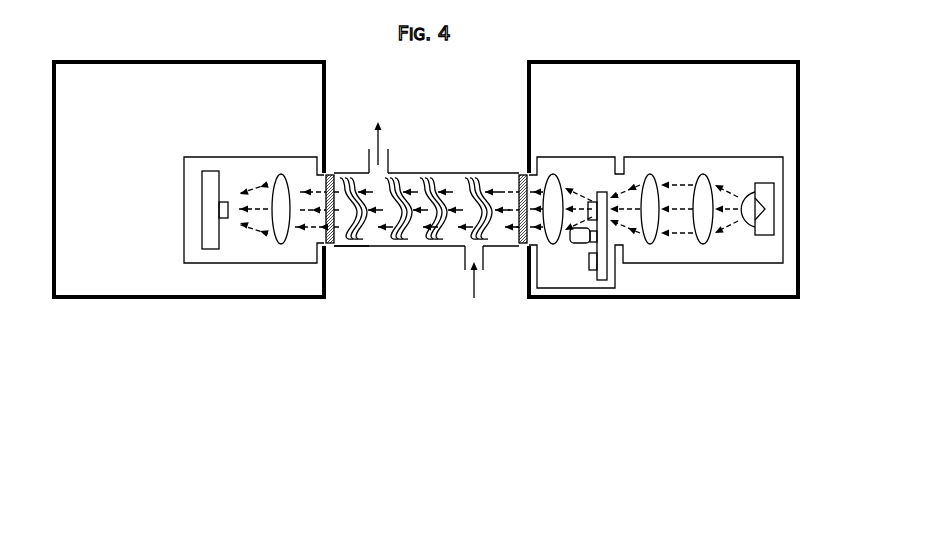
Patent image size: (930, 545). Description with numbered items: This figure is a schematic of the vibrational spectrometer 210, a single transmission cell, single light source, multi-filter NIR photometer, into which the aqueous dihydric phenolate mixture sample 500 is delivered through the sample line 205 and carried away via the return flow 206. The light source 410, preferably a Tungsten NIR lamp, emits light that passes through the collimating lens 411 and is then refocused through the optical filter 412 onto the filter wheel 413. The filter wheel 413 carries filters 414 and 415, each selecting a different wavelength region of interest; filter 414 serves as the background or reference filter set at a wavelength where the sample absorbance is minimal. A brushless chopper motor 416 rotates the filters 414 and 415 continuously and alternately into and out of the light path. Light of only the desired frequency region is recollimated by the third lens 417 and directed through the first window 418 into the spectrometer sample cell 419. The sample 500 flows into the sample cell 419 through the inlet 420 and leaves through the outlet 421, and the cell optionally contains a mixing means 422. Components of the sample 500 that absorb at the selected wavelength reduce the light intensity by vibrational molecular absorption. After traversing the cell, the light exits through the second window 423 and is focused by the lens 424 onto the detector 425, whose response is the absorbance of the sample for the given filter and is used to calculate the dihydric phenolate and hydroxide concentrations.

The vibrational spectrometer 210 is at (375, 373).
The sample line 205 is at (476, 294).
The gas outlet flow 206 is at (382, 130).
The light source 410 is at (765, 235).
The collimating lens (L1) 411 is at (703, 210).
The optical filter (L2) 412 is at (652, 210).
The filter wheel (FW) 413 is at (602, 208).
The filter (F1) 414 is at (592, 205).
The filter 415 is at (595, 270).
The brushless chopper motor 416 is at (580, 240).
The third lens (L3) 417 is at (553, 208).
The first window 418 is at (520, 243).
The spectrometer sample cell 419 is at (440, 166).
The inlet 420 is at (465, 263).
The outlet 421 is at (369, 166).
The mixing means 422 is at (369, 246).
The second window 423 is at (332, 243).
The lens (L4) 424 is at (281, 209).
The detector (D) 425 is at (211, 211).
The aqueous dihydric phenolate mixture sample 500 is at (396, 237).